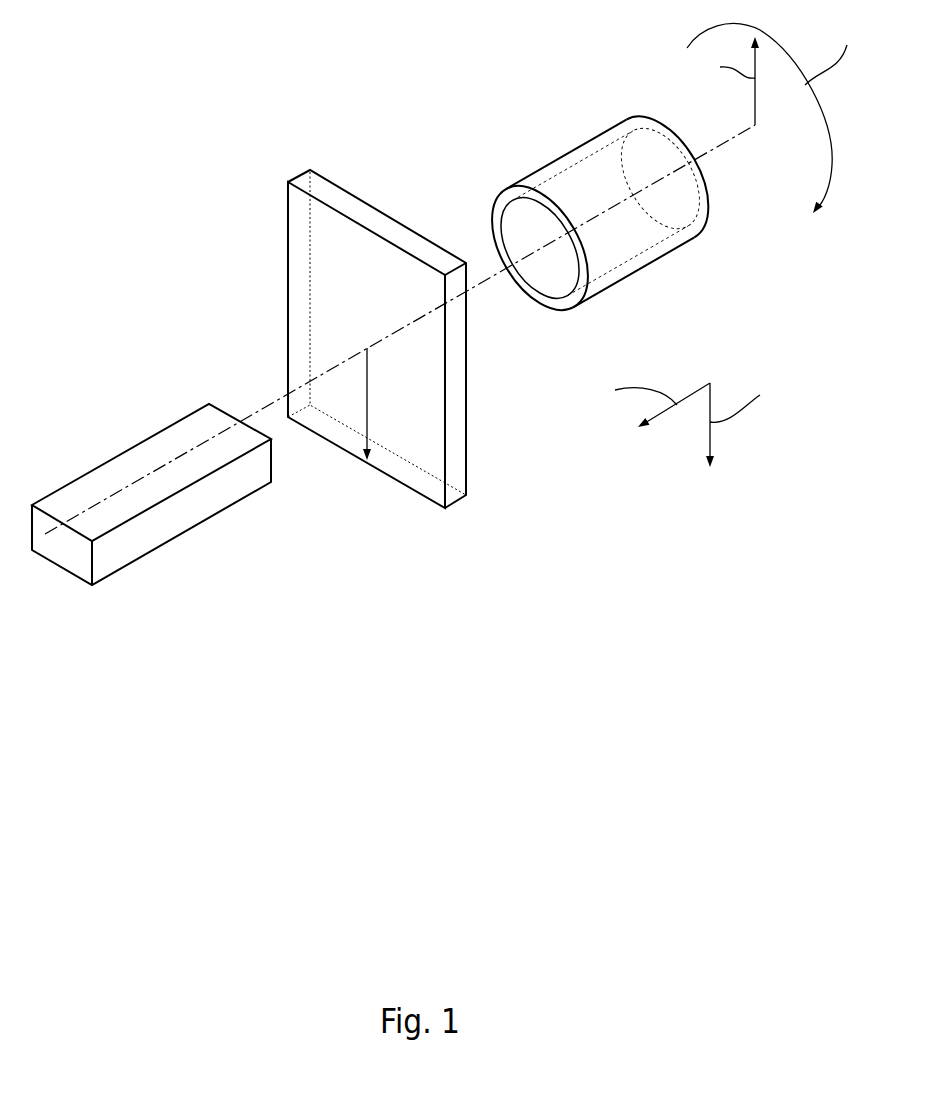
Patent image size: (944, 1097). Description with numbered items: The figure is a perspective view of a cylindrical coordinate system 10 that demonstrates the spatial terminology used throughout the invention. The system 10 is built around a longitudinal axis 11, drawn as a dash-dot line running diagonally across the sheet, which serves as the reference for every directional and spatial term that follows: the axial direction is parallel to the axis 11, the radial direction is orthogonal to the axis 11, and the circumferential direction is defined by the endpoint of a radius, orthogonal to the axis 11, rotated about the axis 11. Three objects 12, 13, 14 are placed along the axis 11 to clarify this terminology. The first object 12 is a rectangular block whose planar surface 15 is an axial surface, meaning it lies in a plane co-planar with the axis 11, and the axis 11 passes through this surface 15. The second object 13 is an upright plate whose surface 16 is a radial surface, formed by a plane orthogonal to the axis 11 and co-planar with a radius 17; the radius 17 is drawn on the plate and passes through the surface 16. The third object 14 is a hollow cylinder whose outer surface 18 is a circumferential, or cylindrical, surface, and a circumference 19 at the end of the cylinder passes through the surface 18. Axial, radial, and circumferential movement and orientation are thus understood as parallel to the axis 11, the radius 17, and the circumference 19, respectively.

The cylindrical coordinate system 10 is at (238, 214).
The longitudinal axis 11 is at (700, 153).
The object 12 is at (151, 523).
The object 13 is at (377, 361).
The object 14 is at (564, 223).
The axial surface 15 is at (112, 477).
The radial surface 16 is at (302, 297).
The radius 17 is at (367, 398).
The circumferential surface 18 is at (567, 152).
The circumference 19 is at (493, 213).